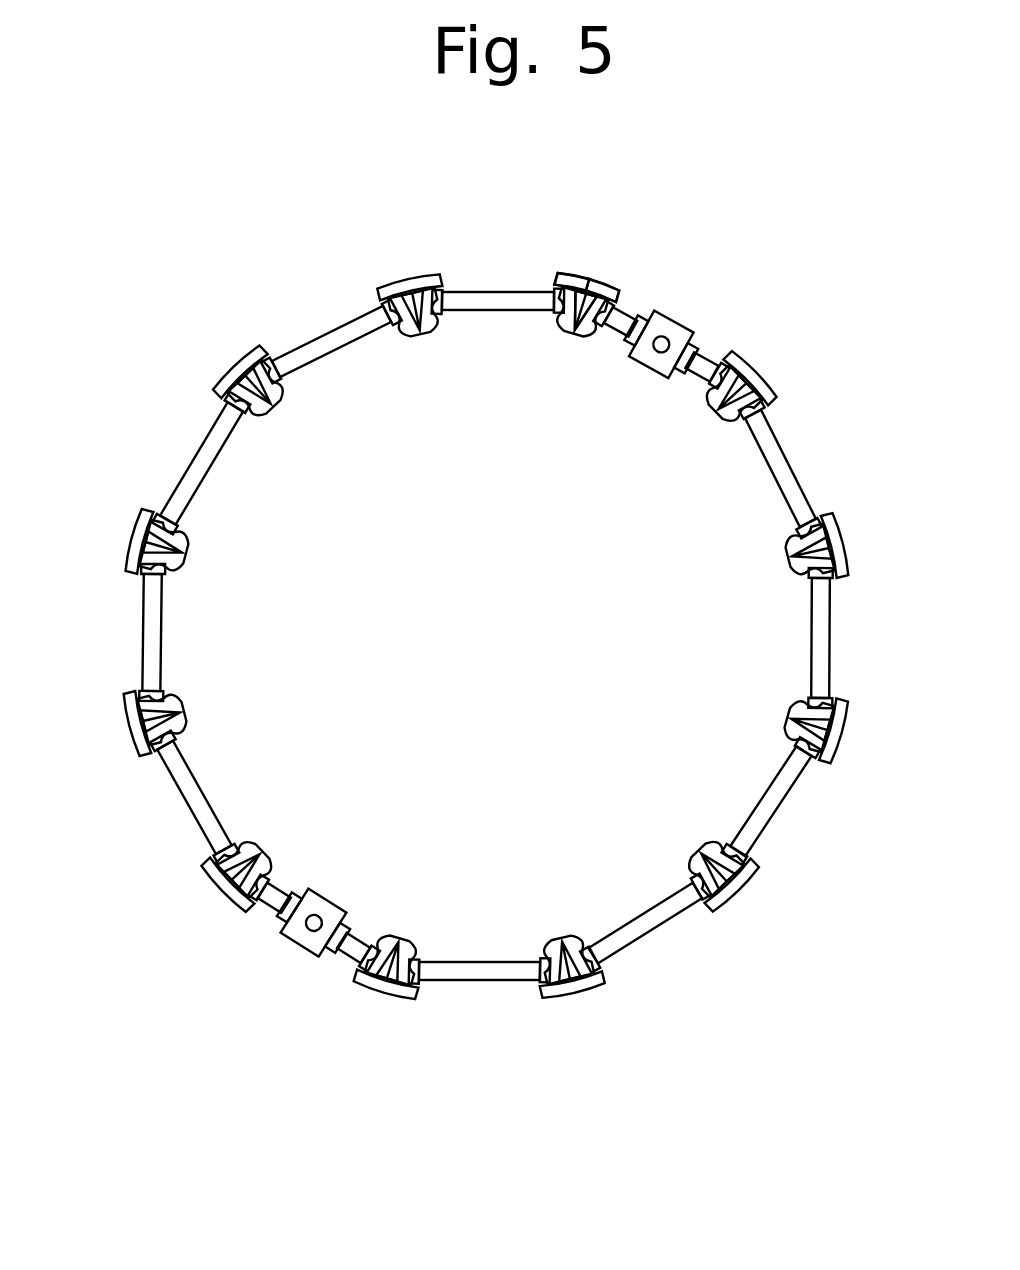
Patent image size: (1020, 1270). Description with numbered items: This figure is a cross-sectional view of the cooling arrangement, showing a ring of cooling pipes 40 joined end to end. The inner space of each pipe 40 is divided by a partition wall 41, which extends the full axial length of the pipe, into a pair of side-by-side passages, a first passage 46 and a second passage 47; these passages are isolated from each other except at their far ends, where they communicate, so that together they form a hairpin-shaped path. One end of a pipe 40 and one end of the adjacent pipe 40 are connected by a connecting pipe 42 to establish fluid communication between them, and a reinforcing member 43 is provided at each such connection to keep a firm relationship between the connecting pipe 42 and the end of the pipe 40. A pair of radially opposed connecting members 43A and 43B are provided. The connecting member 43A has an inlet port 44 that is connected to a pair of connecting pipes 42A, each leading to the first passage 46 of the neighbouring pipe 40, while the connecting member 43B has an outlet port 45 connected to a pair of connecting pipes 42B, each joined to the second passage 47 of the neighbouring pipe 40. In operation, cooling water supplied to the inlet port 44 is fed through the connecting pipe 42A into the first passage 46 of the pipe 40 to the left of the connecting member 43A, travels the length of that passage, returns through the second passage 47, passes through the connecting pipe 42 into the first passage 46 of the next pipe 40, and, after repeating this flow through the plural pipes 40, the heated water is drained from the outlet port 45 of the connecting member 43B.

The pipe 40 is at (772, 392).
The partition wall 41 is at (588, 300).
The connecting pipe 42 is at (490, 312).
The connecting pipe 42A is at (725, 307).
The connecting pipe 42B is at (273, 946).
The reinforcing member 43 is at (420, 333).
The connecting member 43A is at (690, 340).
The connecting member 43B is at (285, 938).
The inlet port 44 is at (670, 340).
The outlet port 45 is at (312, 930).
The first passage 46 is at (598, 303).
The second passage 47 is at (582, 298).